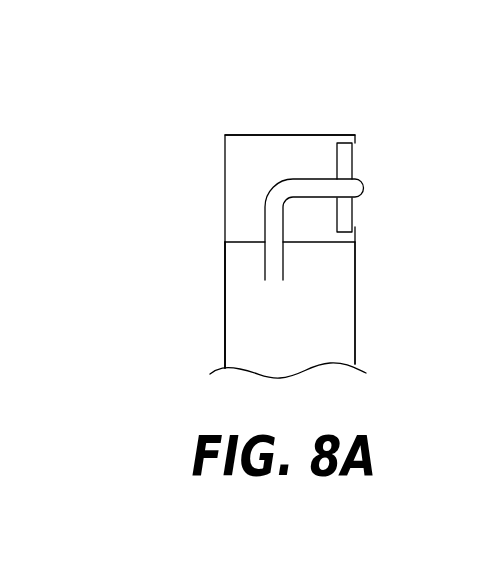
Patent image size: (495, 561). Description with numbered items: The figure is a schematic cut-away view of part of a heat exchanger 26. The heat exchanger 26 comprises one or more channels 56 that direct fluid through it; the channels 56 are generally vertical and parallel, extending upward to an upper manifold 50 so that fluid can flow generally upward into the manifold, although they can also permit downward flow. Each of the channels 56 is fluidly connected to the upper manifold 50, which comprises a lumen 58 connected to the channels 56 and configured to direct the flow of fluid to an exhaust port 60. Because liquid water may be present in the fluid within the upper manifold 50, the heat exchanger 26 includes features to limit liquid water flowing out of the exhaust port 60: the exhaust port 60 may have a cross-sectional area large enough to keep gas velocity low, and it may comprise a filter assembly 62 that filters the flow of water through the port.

The heat exchanger 26 is at (179, 254).
The upper manifold 50 is at (201, 130).
The channels 56 is at (280, 329).
The lumen 58 is at (274, 149).
The exhaust port 60 is at (370, 169).
The filter assembly 62 is at (343, 141).